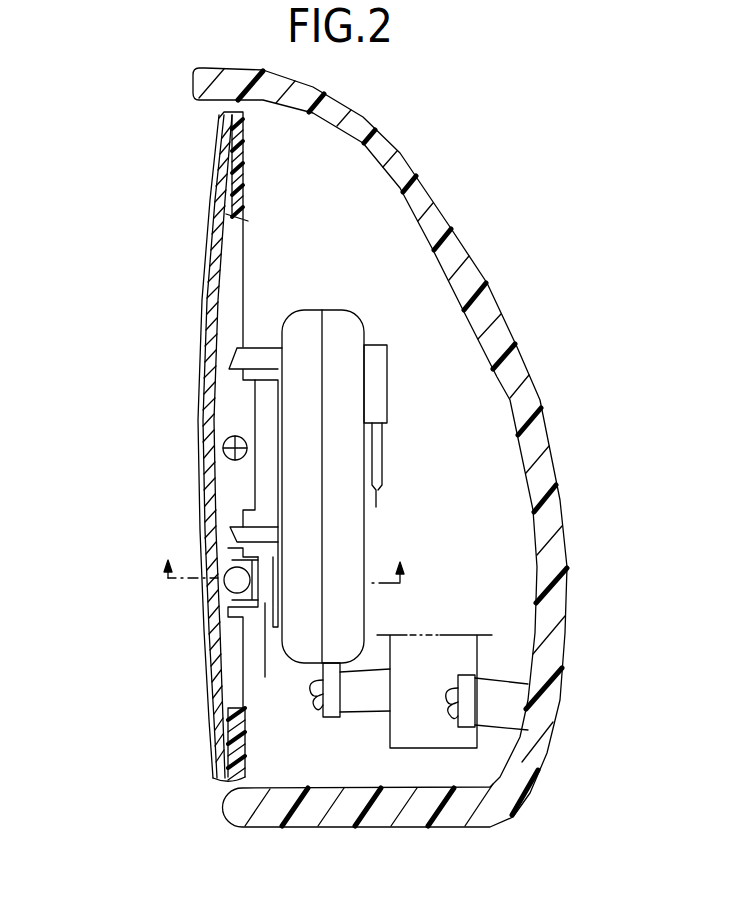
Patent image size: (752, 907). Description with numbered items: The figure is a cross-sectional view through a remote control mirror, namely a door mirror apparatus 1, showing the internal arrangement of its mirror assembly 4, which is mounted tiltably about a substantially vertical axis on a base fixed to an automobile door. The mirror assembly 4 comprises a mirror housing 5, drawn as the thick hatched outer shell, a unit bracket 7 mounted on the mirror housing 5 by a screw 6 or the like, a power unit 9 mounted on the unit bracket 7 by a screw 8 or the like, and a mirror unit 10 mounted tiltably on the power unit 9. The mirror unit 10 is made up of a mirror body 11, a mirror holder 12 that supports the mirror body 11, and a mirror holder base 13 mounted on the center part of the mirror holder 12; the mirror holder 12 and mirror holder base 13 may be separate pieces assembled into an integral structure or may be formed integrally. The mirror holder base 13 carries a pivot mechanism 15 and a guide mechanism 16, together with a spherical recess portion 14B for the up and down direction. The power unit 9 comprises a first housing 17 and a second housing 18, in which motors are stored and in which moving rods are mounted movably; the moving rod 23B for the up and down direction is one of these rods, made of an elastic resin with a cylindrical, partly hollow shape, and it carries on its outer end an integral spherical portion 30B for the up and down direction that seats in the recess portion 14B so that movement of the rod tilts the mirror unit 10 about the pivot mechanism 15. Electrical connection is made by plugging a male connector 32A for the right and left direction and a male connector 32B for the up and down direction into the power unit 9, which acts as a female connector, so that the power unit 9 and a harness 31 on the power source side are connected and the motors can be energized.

The door mirror apparatus 1 is at (150, 121).
The mirror assembly 4 is at (380, 447).
The mirror housing 5 is at (423, 188).
The mirror unit 10 is at (201, 166).
The mirror body 11 is at (207, 262).
The mirror holder 12 is at (243, 183).
The mirror holder base 13 is at (240, 334).
The pivot mechanism 15 is at (228, 442).
The guide mechanism 16 is at (237, 355).
The recess portion for the up and down direction 14B is at (232, 570).
The spherical portion for the up and down direction 30B is at (237, 584).
The moving rod for the up and down direction 23B is at (230, 702).
The power unit 9 is at (323, 446).
The first housing 17 is at (323, 464).
The second housing 18 is at (343, 330).
The male connector for the right and left direction 32A is at (393, 356).
The male connector for the up and down direction 32B is at (371, 341).
The harness 31 is at (380, 503).
The screw 8 is at (313, 694).
The unit bracket 7 is at (392, 734).
The screw 6 is at (448, 690).